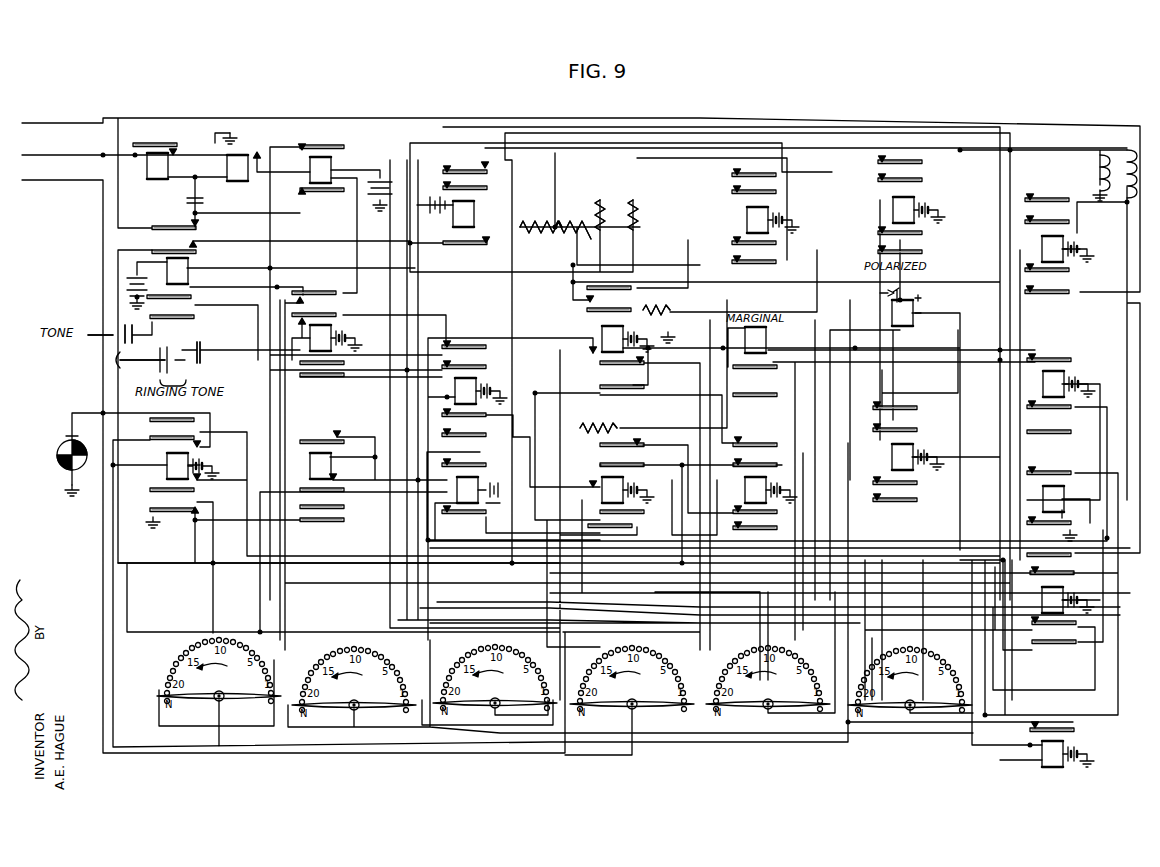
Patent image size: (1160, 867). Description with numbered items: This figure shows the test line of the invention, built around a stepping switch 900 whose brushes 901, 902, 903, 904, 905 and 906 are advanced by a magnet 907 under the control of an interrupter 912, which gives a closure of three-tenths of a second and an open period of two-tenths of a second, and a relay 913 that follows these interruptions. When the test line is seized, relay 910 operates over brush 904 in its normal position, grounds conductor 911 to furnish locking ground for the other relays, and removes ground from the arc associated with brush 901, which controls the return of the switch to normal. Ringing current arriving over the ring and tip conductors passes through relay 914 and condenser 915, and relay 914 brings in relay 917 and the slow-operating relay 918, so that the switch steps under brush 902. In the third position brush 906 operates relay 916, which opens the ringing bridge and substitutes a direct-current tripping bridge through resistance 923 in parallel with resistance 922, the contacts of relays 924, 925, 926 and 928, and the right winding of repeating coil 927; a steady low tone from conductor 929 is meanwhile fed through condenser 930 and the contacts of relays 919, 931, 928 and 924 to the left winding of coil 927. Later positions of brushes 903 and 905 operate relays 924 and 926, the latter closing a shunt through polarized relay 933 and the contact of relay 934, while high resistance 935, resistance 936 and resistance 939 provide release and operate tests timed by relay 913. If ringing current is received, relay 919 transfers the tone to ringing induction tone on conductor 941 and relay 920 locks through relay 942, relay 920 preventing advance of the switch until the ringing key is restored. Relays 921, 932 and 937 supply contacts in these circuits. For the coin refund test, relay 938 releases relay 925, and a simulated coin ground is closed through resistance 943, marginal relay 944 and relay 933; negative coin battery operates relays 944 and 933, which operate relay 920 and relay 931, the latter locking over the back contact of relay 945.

The switch 900 is at (360, 771).
The brush 901 is at (219, 681).
The brush 902 is at (350, 678).
The brush 903 is at (495, 687).
The brush 904 is at (632, 676).
The brush 905 is at (768, 688).
The brush 906 is at (910, 675).
The magnet 907 is at (1042, 760).
The relay 910 is at (167, 460).
The conductor 911 is at (150, 562).
The interrupter 912 is at (57, 455).
The relay 913 is at (760, 207).
The relay 914 is at (152, 153).
The condenser 915 is at (204, 201).
The relay 916 is at (174, 258).
The relay 917 is at (238, 156).
The relay 918 is at (316, 157).
The relay 919 is at (318, 325).
The relay 920 is at (466, 503).
The relay 921 is at (462, 378).
The resistance 922 is at (640, 212).
The resistance 923 is at (565, 222).
The relay 924 is at (463, 228).
The relay 925 is at (598, 340).
The relay 926 is at (893, 208).
The repeating coil 927 is at (1105, 152).
The relay 928 is at (1050, 236).
The conductor 929 is at (96, 338).
The condenser 930 is at (145, 326).
The relay 931 is at (1054, 613).
The relay 932 is at (905, 449).
The polarizing relay 933 is at (892, 313).
The relay 934 is at (1058, 374).
The high resistance 935 is at (668, 306).
The resistance 936 is at (535, 222).
The relay 937 is at (754, 477).
The relay 938 is at (602, 484).
The resistance 939 is at (605, 200).
The conductor 941 is at (185, 372).
The relay 942 is at (318, 453).
The resistance 943 is at (603, 424).
The relay 944 is at (757, 353).
The relay 945 is at (1054, 490).